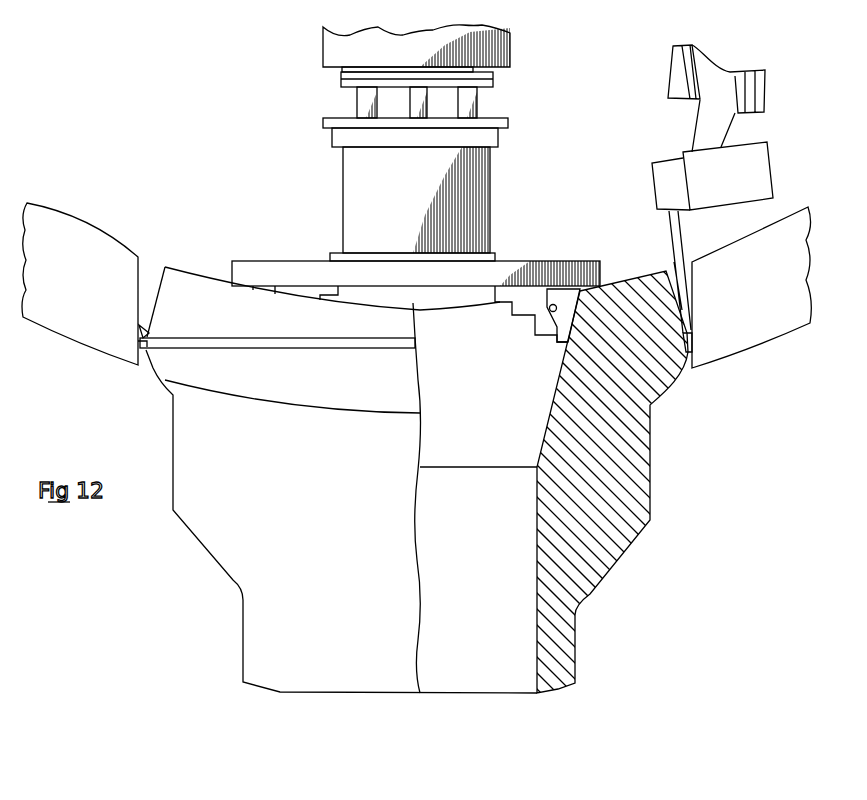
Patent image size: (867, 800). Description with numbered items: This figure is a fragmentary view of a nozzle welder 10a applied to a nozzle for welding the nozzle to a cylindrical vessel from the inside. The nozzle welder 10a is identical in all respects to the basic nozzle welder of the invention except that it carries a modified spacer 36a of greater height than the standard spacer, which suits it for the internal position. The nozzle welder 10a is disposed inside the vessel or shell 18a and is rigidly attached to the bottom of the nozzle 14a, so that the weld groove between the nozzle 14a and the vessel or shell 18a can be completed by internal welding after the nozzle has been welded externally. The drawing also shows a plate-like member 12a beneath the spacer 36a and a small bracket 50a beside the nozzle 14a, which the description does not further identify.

The nozzle welder 10a is at (668, 72).
The support plate 12a is at (278, 259).
The nozzle 14a is at (650, 520).
The vessel or shell 18a is at (757, 347).
The modified spacer 36a is at (490, 210).
The bracket 50a is at (573, 263).